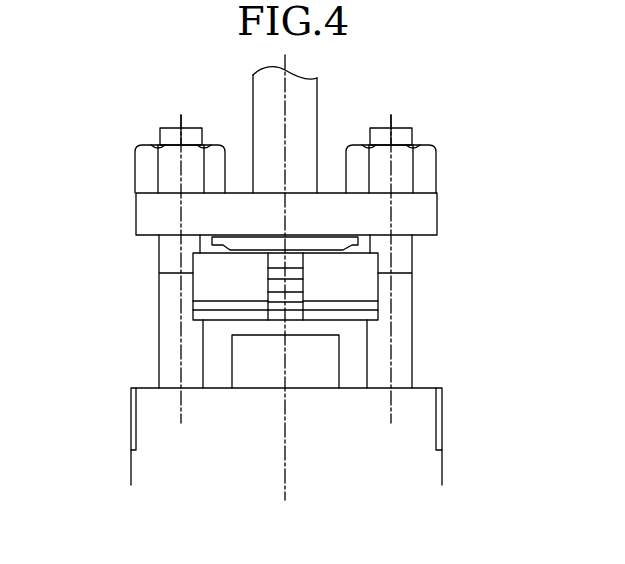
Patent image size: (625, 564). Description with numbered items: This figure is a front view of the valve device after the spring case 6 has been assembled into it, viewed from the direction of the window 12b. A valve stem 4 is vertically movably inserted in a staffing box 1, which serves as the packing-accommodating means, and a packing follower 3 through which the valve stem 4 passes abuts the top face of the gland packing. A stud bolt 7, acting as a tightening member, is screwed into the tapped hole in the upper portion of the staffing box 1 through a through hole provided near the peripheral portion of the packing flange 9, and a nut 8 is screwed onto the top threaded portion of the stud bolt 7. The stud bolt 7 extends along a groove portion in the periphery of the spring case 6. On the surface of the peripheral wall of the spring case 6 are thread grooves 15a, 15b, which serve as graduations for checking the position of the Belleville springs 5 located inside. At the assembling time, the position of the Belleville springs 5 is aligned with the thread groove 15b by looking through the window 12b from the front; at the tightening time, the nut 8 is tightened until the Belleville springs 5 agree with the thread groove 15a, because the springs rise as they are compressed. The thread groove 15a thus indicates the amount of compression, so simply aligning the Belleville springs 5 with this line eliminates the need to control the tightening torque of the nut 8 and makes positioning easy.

The staffing box 1 is at (430, 467).
The packing follower 3 is at (242, 357).
The valve stem 4 is at (317, 95).
The Belleville springs 5 is at (295, 273).
The spring case 6 is at (203, 291).
The stud bolt 7 is at (410, 352).
The nut 8 is at (436, 160).
The packing flange 9 is at (437, 218).
The window 12b is at (268, 285).
The thread groove (graduation at the tightening time) 15a is at (373, 297).
The thread groove (graduation at the assembling time) 15b is at (363, 312).